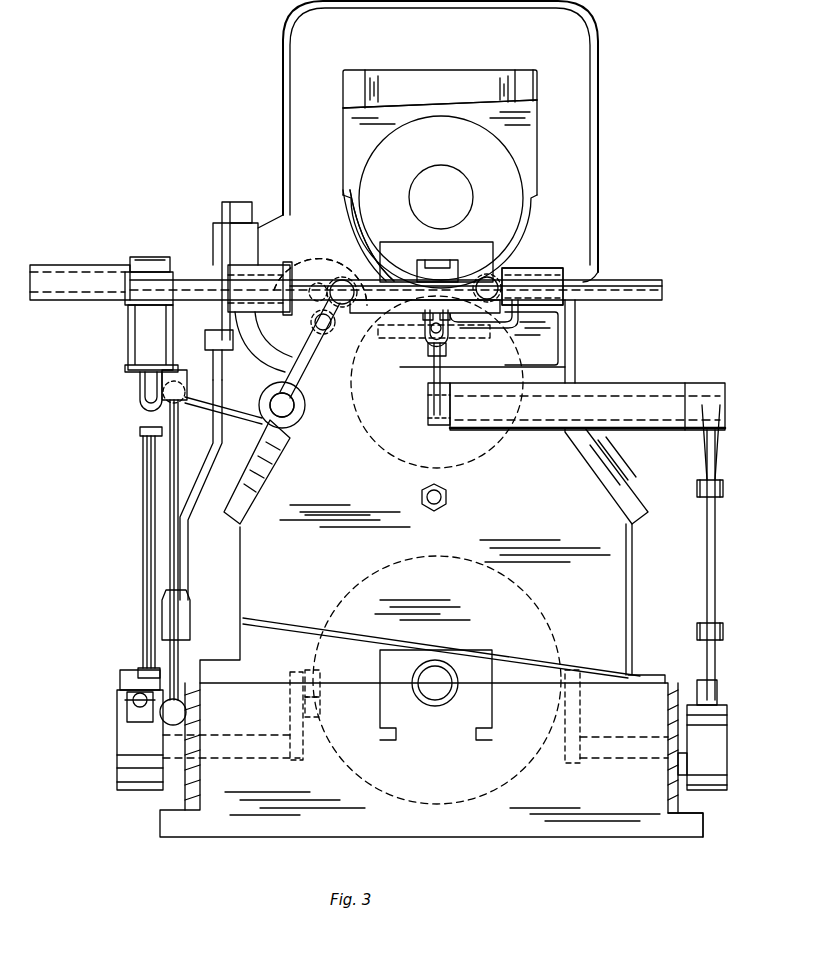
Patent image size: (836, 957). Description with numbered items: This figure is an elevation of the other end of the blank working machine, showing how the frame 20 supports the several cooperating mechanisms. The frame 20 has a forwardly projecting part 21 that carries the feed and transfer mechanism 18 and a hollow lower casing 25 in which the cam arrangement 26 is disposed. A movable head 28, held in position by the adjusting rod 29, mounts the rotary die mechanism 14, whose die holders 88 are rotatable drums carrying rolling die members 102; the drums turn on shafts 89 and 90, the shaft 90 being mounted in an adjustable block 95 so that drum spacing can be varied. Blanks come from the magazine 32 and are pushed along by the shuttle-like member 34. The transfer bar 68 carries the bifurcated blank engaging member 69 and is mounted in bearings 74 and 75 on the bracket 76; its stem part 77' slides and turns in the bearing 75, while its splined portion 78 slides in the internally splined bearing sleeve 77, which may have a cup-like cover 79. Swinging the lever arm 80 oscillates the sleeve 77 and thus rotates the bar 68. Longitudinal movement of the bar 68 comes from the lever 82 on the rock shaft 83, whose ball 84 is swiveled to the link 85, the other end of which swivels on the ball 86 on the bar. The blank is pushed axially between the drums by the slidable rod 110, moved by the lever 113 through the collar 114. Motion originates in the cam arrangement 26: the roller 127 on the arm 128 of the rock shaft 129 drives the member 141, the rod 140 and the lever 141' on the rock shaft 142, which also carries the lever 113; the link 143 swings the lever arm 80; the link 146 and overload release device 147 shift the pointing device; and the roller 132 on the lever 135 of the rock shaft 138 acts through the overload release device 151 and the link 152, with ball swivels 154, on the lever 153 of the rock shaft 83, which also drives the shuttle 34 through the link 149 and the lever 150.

The rotary die mechanism 14 is at (520, 172).
The feed and transfer mechanism 18 is at (350, 273).
The frame 20 is at (498, 830).
The forwardly projecting frame part 21 is at (575, 440).
The casing 25 is at (665, 800).
The cam arrangement 26 is at (430, 812).
The movable head 28 is at (592, 104).
The adjusting rod 29 is at (452, 497).
The magazine 32 is at (222, 212).
The shuttle-like member 34 is at (182, 275).
The bar 68 is at (372, 238).
The blank engaging member 69 is at (452, 262).
The bearing 74 is at (262, 266).
The bearing 75 is at (553, 268).
The bracket 76 is at (550, 338).
The bearing sleeve 77 is at (331, 282).
The stem part 77' is at (542, 273).
The splined portion 78 is at (368, 262).
The cup-like cover 79 is at (143, 272).
The lever arm 80 is at (213, 335).
The lever 82 is at (300, 405).
The rock shaft 83 is at (292, 418).
The ball 84 is at (310, 338).
The link 85 is at (388, 280).
The ball 86 is at (518, 268).
The die holders 88 is at (495, 148).
The shaft 89 is at (428, 400).
The shaft 90 is at (462, 192).
The block 95 is at (516, 106).
The die members 102 is at (335, 262).
The rod 110 is at (425, 335).
The lever 113 is at (446, 350).
The collar 114 is at (448, 330).
The roller 127 is at (556, 700).
The arm 128 is at (581, 716).
The rock shaft 129 is at (626, 755).
The roller 132 is at (318, 672).
The lever 135 is at (318, 732).
The rock shaft 138 is at (247, 735).
The rod 140 is at (708, 560).
The member 141 is at (689, 565).
The lever 141' is at (685, 442).
The rock shaft 142 is at (630, 400).
The link 143 is at (197, 498).
The link 146 is at (150, 500).
The overload release device 147 is at (138, 347).
The link 149 is at (172, 370).
The lever 150 is at (300, 322).
The overload release device 151 is at (120, 740).
The link 152 is at (170, 462).
The lever 153 is at (245, 422).
The ball swivels 154 is at (143, 398).